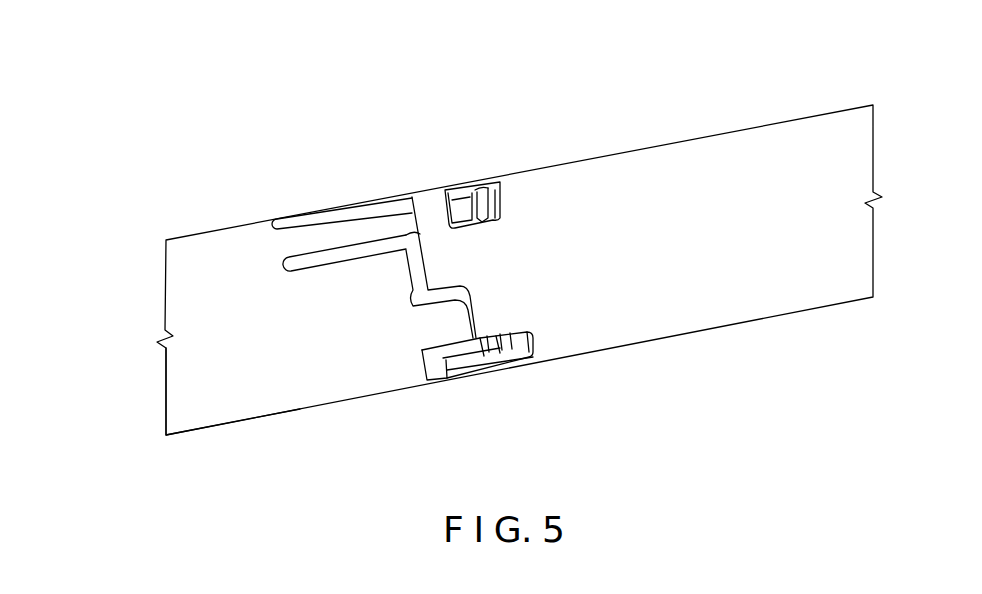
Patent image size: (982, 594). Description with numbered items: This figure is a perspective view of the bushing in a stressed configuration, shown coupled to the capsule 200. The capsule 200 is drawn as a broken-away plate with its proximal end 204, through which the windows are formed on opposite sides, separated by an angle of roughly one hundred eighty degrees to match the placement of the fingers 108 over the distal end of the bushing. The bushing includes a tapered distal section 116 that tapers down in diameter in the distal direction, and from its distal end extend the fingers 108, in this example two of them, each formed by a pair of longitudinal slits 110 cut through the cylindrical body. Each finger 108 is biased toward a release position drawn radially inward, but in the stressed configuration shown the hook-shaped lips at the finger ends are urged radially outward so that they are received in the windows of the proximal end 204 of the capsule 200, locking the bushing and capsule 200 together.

The capsule 200 is at (732, 152).
The distal section 116 is at (208, 385).
The longitudinal slits 110 is at (315, 260).
The fingers 108 is at (388, 218).
The proximal end 204 is at (450, 363).